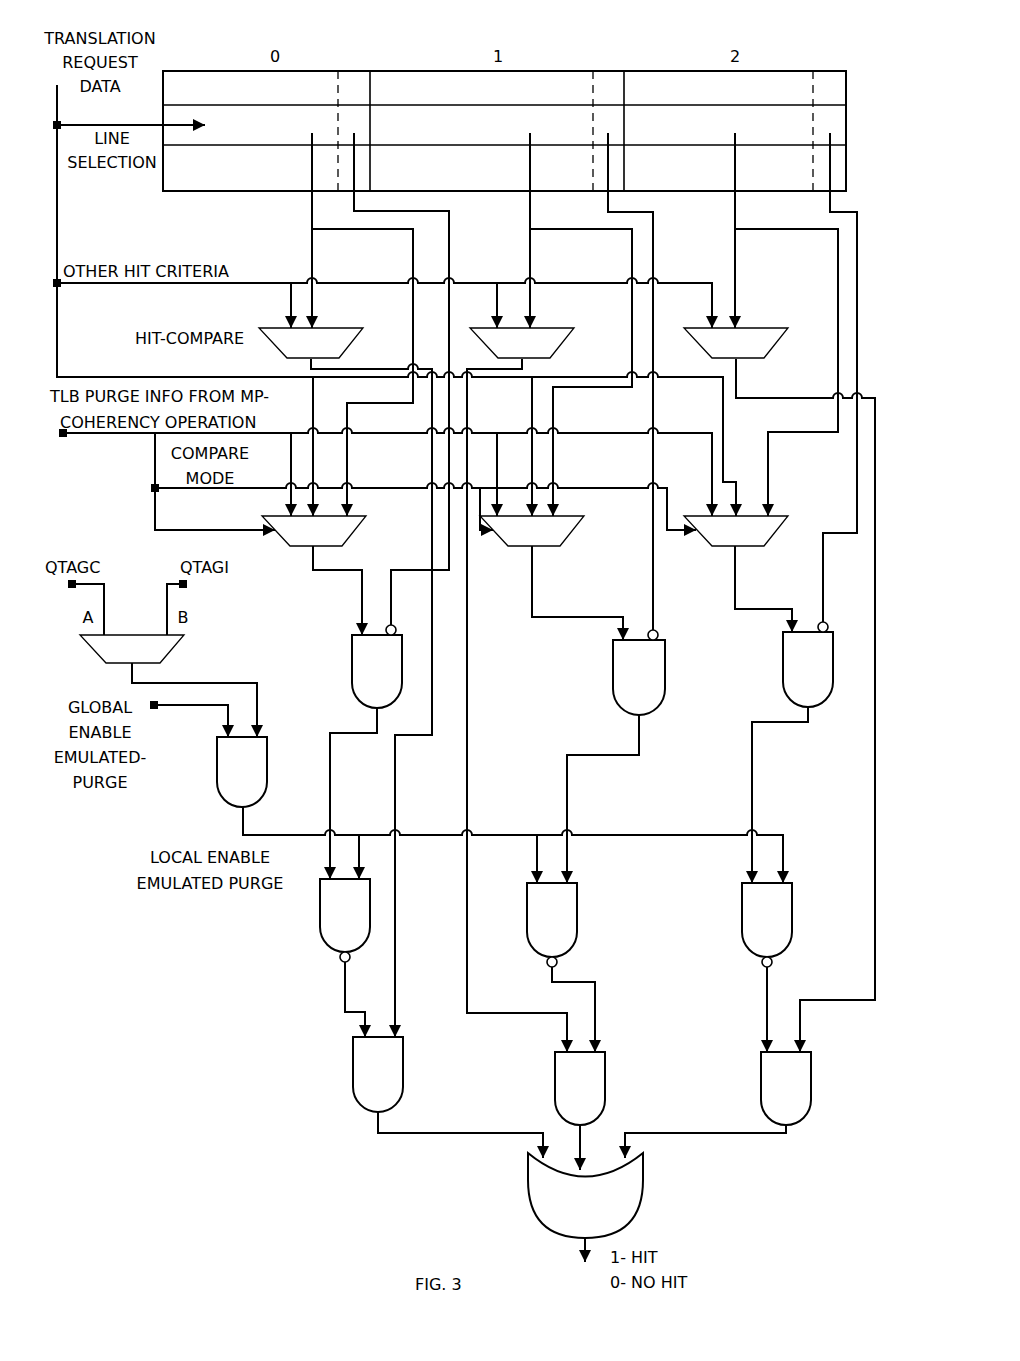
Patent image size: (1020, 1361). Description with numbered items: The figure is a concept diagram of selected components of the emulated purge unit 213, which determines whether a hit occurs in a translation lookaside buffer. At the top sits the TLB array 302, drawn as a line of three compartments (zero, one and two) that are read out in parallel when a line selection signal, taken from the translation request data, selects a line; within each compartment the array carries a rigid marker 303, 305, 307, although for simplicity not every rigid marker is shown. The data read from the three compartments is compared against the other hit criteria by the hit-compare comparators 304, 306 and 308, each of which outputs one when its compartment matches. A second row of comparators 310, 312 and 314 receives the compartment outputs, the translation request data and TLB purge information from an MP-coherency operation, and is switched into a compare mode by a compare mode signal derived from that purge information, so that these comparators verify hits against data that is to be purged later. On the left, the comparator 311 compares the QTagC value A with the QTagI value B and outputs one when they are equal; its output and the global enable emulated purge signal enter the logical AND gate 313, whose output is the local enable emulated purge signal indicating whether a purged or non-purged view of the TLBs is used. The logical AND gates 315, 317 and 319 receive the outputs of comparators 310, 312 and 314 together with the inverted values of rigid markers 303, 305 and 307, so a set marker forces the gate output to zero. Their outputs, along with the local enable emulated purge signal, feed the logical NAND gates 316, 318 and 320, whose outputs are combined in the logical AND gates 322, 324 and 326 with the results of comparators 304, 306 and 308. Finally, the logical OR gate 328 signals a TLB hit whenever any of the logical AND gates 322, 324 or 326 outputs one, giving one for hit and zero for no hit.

The emulated purge unit 213 is at (243, 38).
The TLB array 302 is at (766, 72).
The rigid marker 303 is at (329, 125).
The rigid marker 305 is at (584, 125).
The rigid marker 307 is at (807, 125).
The comparator 304 is at (345, 345).
The comparator 306 is at (565, 345).
The comparator 308 is at (775, 345).
The comparator 310 is at (357, 532).
The comparator 312 is at (575, 532).
The comparator 314 is at (765, 545).
The comparator 311 is at (172, 648).
The logical AND gate 313 is at (214, 800).
The logical AND gate 315 is at (342, 677).
The logical AND gate 317 is at (607, 674).
The logical AND gate 319 is at (779, 666).
The logical NAND gate 316 is at (316, 937).
The logical NAND gate 318 is at (575, 912).
The logical NAND gate 320 is at (793, 912).
The logical AND gate 322 is at (401, 1078).
The logical AND gate 324 is at (604, 1100).
The logical AND gate 326 is at (810, 1091).
The logical OR gate 328 is at (768, 1195).